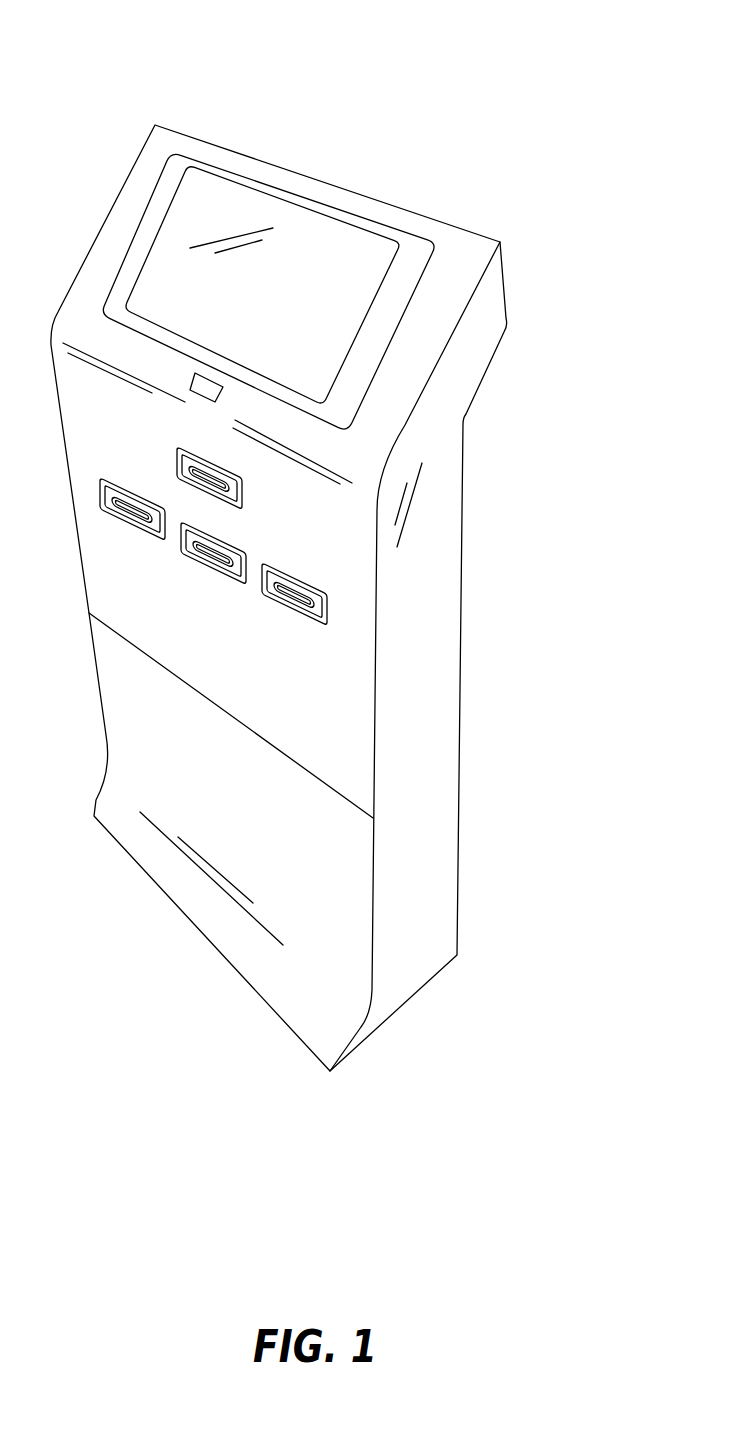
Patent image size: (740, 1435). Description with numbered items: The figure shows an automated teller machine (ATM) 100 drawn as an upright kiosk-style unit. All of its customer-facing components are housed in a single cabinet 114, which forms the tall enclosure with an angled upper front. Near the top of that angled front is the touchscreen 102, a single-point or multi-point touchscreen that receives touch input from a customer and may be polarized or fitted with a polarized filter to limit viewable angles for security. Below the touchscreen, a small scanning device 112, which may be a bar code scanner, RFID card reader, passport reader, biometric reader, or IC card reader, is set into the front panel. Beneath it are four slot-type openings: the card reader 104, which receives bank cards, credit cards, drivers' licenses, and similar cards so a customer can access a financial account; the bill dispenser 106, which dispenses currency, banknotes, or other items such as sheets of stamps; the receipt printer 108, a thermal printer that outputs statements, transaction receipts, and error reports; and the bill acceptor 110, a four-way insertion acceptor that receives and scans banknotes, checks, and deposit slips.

The automated teller machine 100 is at (560, 44).
The touchscreen 102 is at (333, 218).
The card reader 104 is at (245, 490).
The bill dispenser 106 is at (140, 532).
The receipt printer 108 is at (213, 575).
The bill acceptor 110 is at (303, 622).
The scanning device 112 is at (207, 405).
The cabinet 114 is at (485, 236).